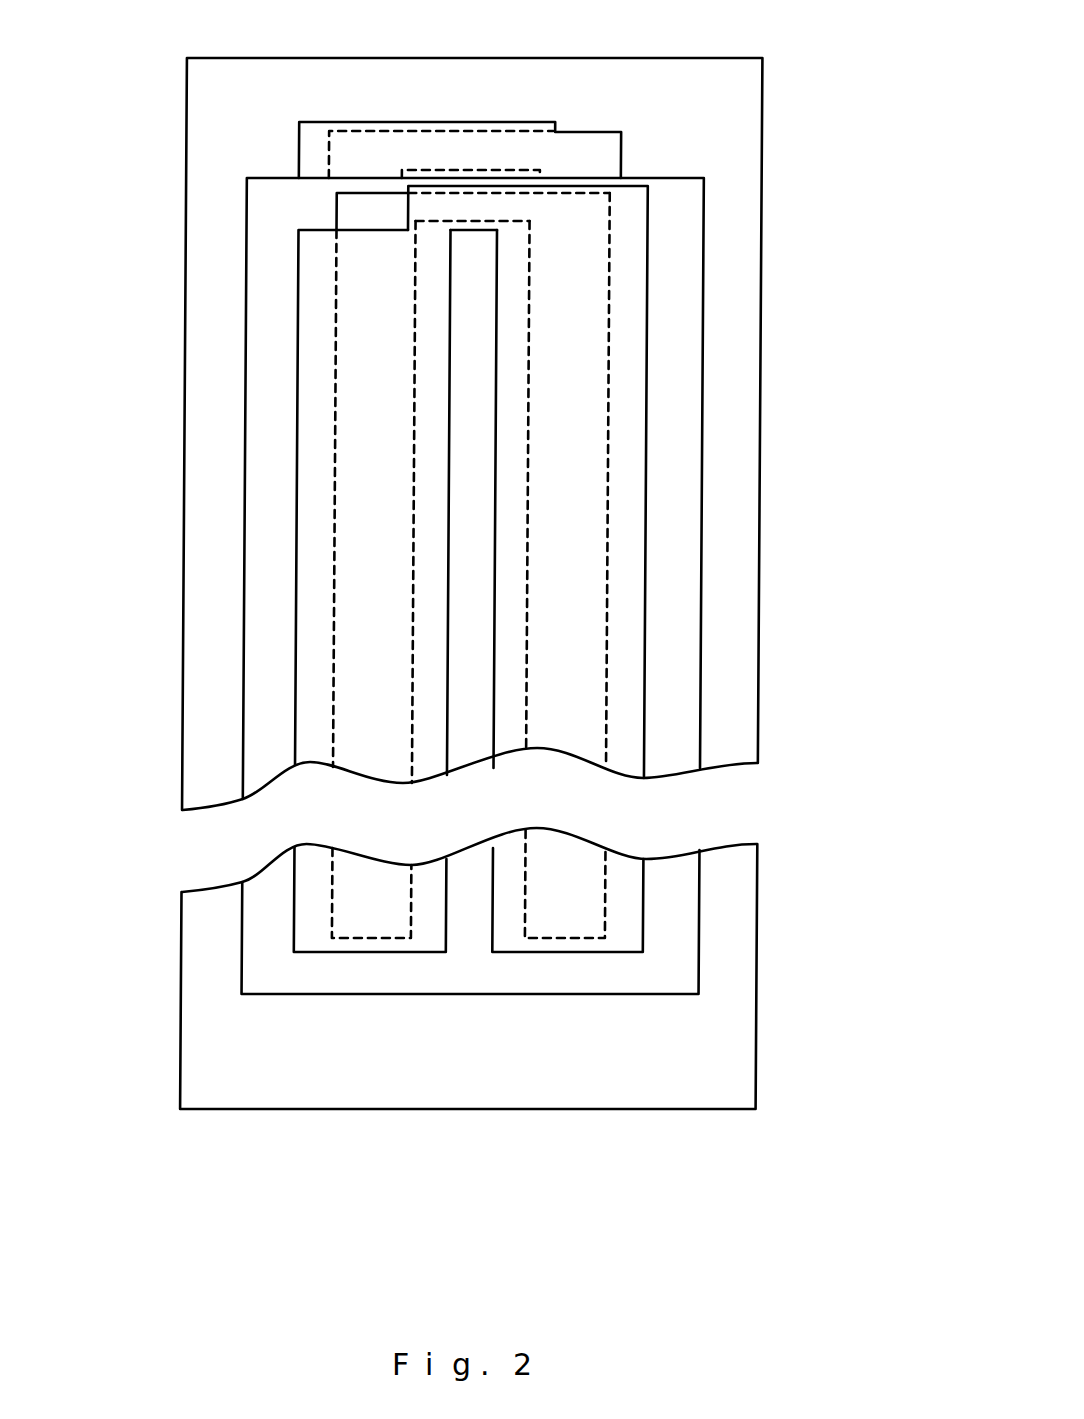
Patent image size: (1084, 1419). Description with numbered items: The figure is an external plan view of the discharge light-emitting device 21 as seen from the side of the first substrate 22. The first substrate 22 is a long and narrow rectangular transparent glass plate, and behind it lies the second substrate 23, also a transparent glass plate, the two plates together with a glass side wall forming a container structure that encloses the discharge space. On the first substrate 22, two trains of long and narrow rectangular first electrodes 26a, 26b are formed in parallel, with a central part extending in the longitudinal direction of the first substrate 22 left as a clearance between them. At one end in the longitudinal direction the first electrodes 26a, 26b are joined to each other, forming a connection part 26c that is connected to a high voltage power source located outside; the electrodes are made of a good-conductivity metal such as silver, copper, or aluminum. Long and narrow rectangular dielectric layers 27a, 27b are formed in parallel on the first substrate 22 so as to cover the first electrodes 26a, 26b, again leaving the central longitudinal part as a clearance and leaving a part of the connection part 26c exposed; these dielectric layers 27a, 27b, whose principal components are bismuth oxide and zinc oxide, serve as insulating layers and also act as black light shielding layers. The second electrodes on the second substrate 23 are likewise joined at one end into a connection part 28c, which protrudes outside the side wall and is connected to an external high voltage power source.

The discharge light-emitting device 21 is at (405, 31).
The first substrate 22 is at (686, 500).
The second substrate 23 is at (743, 97).
The first electrode 26a is at (370, 332).
The first electrode 26b is at (584, 395).
The connection part 26c is at (518, 208).
The dielectric layer 27a is at (321, 494).
The dielectric layer 27b is at (630, 618).
The connection part 28c is at (526, 154).